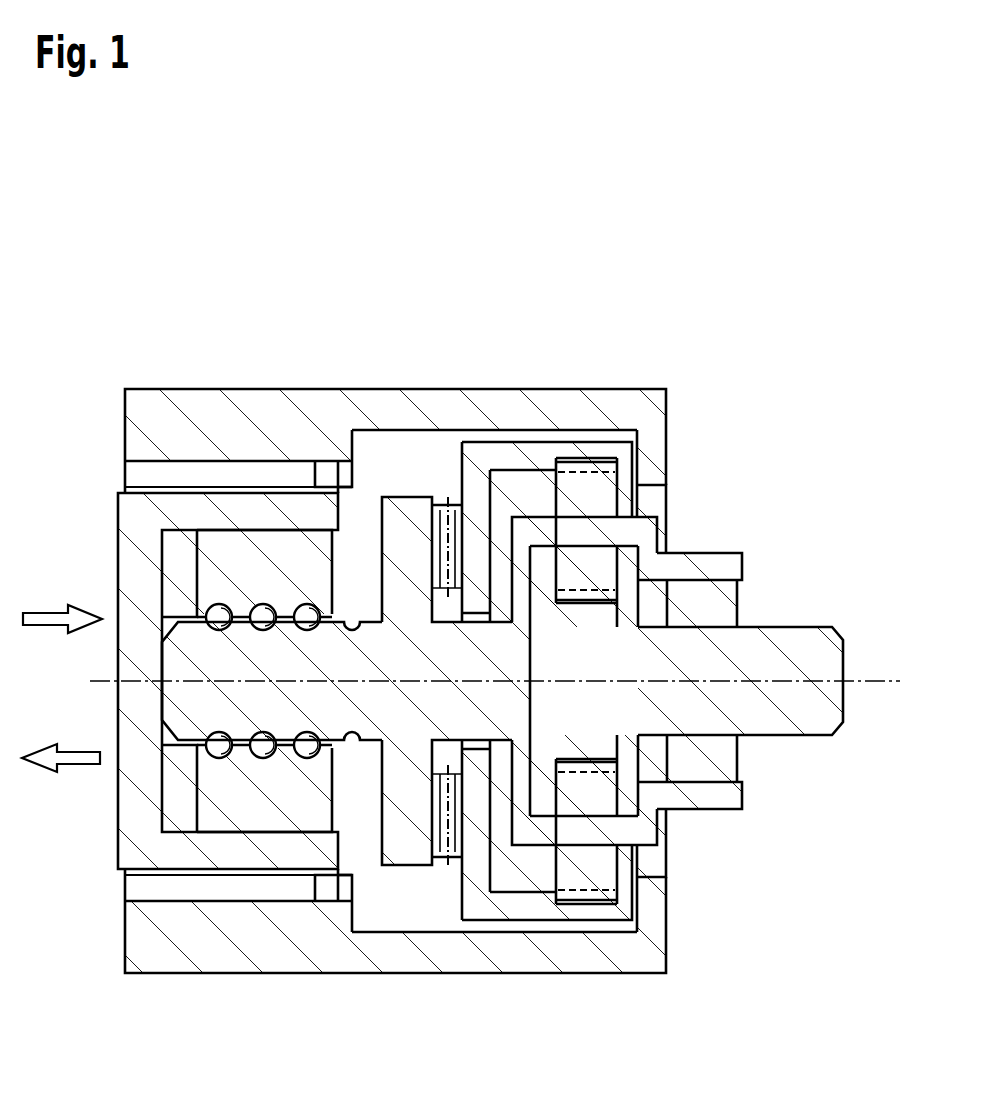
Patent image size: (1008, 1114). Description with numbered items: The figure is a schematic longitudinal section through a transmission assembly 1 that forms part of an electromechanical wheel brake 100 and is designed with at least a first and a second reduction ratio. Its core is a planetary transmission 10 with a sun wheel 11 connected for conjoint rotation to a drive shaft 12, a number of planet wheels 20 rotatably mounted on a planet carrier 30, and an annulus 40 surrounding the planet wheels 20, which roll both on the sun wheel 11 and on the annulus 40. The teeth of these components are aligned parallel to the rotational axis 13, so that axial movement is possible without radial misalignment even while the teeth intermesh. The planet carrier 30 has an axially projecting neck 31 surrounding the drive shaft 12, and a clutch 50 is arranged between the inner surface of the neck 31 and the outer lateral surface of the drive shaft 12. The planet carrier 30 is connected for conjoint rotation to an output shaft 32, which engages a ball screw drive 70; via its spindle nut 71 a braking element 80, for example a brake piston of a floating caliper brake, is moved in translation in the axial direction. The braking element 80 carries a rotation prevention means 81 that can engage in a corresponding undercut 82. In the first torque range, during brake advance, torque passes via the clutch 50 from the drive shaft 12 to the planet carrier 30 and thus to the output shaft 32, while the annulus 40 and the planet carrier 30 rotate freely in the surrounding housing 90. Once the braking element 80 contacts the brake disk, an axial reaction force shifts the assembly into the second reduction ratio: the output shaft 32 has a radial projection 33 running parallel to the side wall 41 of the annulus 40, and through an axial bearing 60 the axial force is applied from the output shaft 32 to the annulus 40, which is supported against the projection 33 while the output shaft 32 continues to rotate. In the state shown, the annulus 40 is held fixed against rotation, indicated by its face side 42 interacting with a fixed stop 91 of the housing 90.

The transmission assembly 1 is at (461, 610).
The electromechanical wheel brake 100 is at (461, 610).
The planetary transmission 10 is at (673, 413).
The sun wheel 11 is at (578, 710).
The drive shaft 12 is at (797, 650).
The rotational axis 13 is at (873, 683).
The planet wheels 20 is at (598, 500).
The planet carrier 30 is at (643, 833).
The neck 31 is at (712, 805).
The output shaft 32 is at (197, 728).
The radial projection 33 is at (407, 815).
The annulus 40 is at (502, 452).
The side wall 41 is at (477, 872).
The face side 42 is at (637, 446).
The clutch 50 is at (706, 592).
The axial bearing 60 is at (440, 852).
The ball screw drive 70 is at (188, 616).
The spindle nut 71 is at (205, 546).
The braking element 80 is at (145, 850).
The rotation prevention means 81 is at (325, 478).
The undercut 82 is at (307, 473).
The housing 90 is at (412, 415).
The fixed stop 91 is at (650, 468).